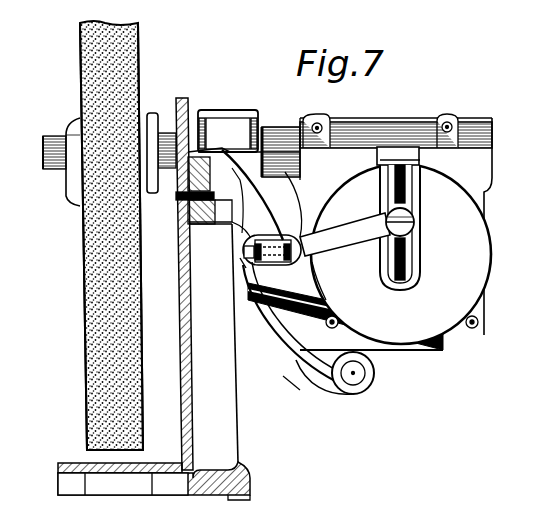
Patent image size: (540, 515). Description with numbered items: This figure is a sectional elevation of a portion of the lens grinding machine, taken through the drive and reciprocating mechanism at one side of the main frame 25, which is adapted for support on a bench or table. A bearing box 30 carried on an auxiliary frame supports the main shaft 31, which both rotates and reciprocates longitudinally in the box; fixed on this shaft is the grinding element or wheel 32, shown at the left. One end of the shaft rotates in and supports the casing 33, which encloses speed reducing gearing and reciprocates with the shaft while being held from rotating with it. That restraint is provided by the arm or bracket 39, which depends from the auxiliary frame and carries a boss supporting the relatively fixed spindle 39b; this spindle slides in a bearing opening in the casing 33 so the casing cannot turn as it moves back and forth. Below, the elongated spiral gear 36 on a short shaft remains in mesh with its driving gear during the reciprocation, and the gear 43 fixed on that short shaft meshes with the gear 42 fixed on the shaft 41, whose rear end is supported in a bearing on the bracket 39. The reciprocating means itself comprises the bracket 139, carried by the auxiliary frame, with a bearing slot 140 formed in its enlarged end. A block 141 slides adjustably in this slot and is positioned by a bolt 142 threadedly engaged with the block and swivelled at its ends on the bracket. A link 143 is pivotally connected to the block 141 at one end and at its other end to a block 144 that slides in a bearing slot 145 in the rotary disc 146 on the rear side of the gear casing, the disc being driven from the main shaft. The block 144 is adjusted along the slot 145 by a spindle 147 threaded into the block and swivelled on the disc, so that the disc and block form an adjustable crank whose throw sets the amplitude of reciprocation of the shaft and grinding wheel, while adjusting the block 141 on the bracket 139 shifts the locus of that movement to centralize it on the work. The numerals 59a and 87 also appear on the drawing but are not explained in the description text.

The main frame 25 is at (216, 451).
The bearing box 30 is at (222, 110).
The main shaft 31 is at (299, 128).
The grinding element or wheel 32 is at (140, 93).
The casing 33 is at (490, 174).
The elongated spiral gear 36 is at (432, 347).
The arm or bracket 39 is at (291, 192).
The spindle 39b is at (328, 300).
The shaft 41 is at (338, 392).
The gear 42 is at (372, 388).
The gear 43 is at (360, 337).
The spring 59a is at (268, 298).
The flange 87 is at (176, 196).
The bracket 139 is at (221, 221).
The bearing slot 140 is at (248, 243).
The block 141 is at (266, 250).
The bolt 142 is at (238, 258).
The link 143 is at (280, 212).
The block 144 is at (415, 207).
The bearing slot 145 is at (421, 170).
The rotary disc 146 is at (470, 222).
The spindle 147 is at (428, 119).